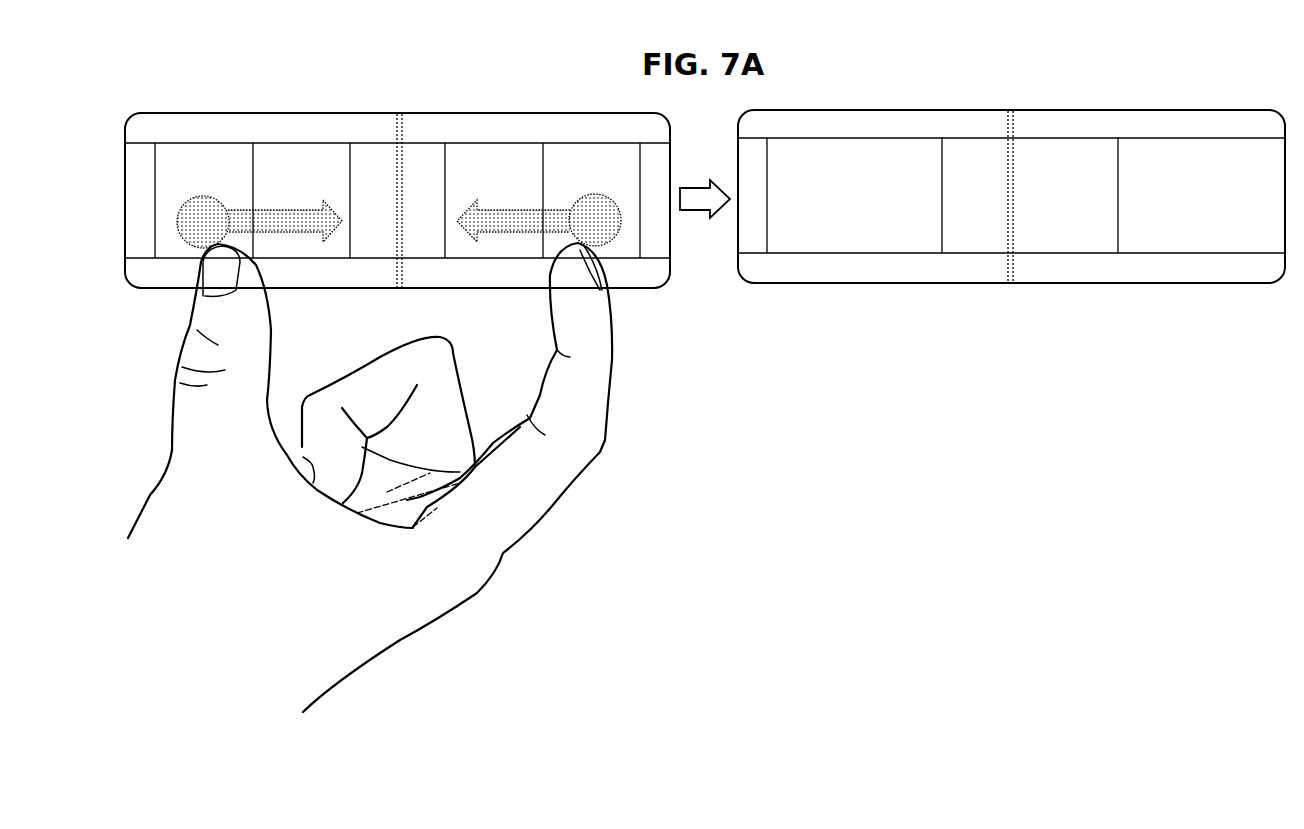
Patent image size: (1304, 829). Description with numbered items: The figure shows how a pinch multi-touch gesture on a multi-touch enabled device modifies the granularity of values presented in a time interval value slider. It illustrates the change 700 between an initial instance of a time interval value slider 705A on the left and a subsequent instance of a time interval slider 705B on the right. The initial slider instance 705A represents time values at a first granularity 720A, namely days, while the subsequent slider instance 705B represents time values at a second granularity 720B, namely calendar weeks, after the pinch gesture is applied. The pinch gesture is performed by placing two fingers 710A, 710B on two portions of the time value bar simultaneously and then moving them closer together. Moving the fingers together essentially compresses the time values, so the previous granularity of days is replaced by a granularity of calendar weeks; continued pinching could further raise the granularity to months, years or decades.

The change 700 is at (896, 52).
The initial instance of a time interval value slider 705A is at (356, 114).
The subsequent instance of a time interval slider 705B is at (1063, 112).
The finger 710A is at (215, 203).
The finger 710B is at (570, 197).
The first granularity 720A is at (177, 142).
The second granularity 720B is at (1190, 138).